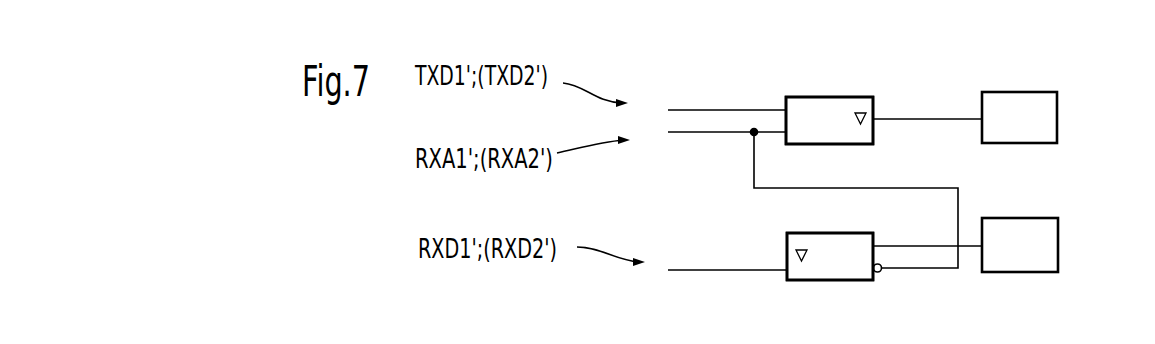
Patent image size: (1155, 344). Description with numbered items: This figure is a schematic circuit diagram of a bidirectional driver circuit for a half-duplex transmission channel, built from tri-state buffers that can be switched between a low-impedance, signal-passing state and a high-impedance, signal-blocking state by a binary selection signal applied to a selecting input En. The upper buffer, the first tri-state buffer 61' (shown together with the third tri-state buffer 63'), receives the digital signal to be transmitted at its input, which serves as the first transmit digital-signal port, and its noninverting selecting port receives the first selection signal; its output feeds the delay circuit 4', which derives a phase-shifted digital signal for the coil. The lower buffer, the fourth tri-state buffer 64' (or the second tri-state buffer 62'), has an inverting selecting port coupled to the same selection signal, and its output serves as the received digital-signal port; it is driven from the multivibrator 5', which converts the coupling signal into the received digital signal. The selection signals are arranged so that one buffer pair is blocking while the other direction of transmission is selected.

The first tri-state buffer 61' is at (861, 96).
The third tri-state buffer 63' is at (829, 120).
The fourth tri-state buffer 64' is at (786, 283).
The second tri-state buffer 62' is at (830, 256).
The delay circuit 4' is at (1032, 93).
The multivibrator 5' is at (1033, 273).